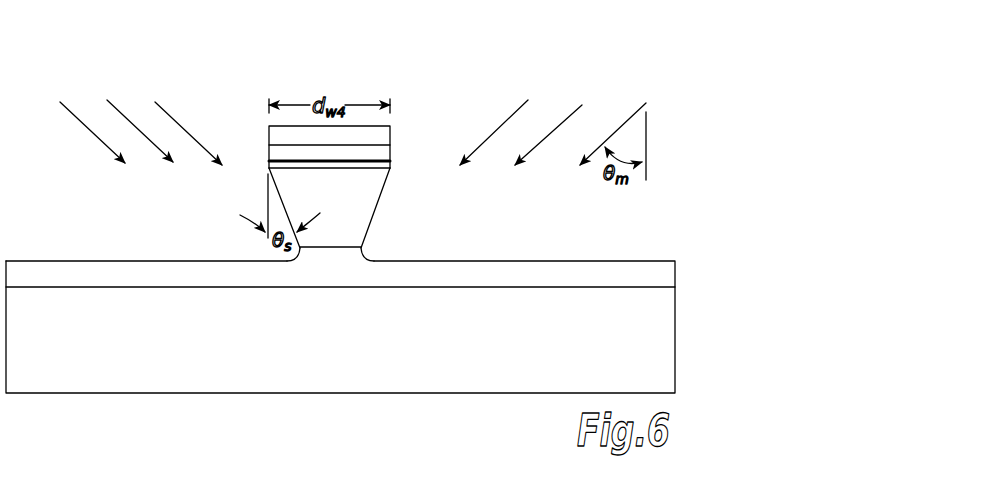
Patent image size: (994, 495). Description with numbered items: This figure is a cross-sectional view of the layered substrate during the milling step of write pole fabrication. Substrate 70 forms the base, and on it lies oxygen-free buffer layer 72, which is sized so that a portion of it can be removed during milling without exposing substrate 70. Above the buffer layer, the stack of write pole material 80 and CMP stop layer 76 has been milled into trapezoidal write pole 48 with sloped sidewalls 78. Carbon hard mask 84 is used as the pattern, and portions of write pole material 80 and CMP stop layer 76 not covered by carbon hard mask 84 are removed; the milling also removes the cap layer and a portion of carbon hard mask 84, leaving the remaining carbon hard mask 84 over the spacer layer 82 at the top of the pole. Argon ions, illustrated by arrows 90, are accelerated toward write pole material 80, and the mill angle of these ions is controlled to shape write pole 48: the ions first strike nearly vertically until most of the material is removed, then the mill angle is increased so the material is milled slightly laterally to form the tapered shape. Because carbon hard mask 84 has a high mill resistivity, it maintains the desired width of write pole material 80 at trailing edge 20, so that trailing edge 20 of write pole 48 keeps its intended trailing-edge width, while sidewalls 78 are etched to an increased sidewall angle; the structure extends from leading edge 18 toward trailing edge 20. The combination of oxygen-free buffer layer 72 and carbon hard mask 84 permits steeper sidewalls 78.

The leading edge 18 is at (198, 413).
The trailing edge 20 is at (477, 68).
The write pole tip 48 is at (341, 198).
The substrate 70 is at (647, 328).
The oxygen-free buffer layer 72 is at (538, 270).
The CMP stop layer 76 is at (275, 165).
The sidewalls 78 is at (274, 183).
The write pole material 80 is at (365, 198).
The Al2O3 spacer layer 82 is at (378, 154).
The carbon hard mask 84 is at (378, 138).
The arrows 90 is at (163, 108).